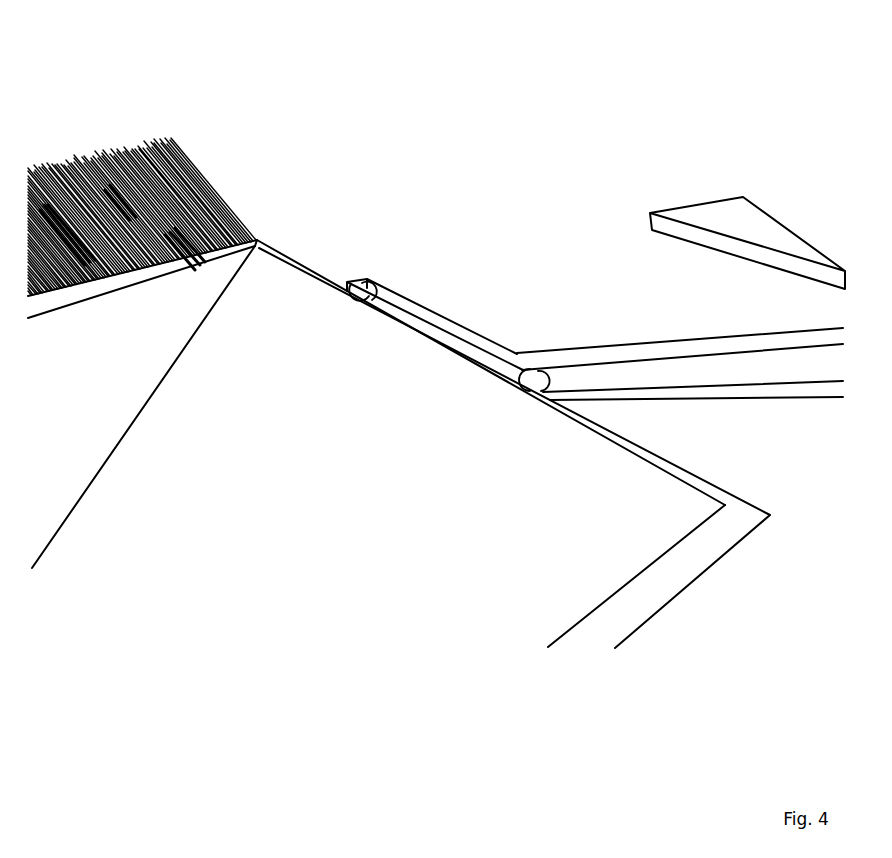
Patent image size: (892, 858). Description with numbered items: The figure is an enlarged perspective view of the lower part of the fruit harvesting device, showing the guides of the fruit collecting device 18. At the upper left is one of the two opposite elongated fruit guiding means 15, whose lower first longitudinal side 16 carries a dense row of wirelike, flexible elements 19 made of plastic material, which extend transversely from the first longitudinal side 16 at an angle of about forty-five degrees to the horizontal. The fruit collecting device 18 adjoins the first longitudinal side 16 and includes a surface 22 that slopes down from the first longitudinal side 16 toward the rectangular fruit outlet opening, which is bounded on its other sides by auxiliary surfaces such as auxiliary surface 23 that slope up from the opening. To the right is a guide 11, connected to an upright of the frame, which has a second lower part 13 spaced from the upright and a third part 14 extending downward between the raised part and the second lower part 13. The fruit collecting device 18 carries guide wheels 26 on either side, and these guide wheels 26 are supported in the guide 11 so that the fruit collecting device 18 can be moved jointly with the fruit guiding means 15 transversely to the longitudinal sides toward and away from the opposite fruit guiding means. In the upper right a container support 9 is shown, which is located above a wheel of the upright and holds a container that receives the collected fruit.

The container support 9 is at (747, 181).
The guide 11 is at (574, 306).
The second lower part 13 is at (421, 304).
The third part 14 is at (652, 350).
The fruit guiding means 15 is at (214, 183).
The first longitudinal side 16 is at (125, 278).
The fruit collecting device 18 is at (788, 502).
The wirelike, flexible elements 19 is at (88, 152).
The surface 22 is at (203, 288).
The auxiliary surface 23 is at (728, 433).
The guide wheel 26 is at (362, 282).